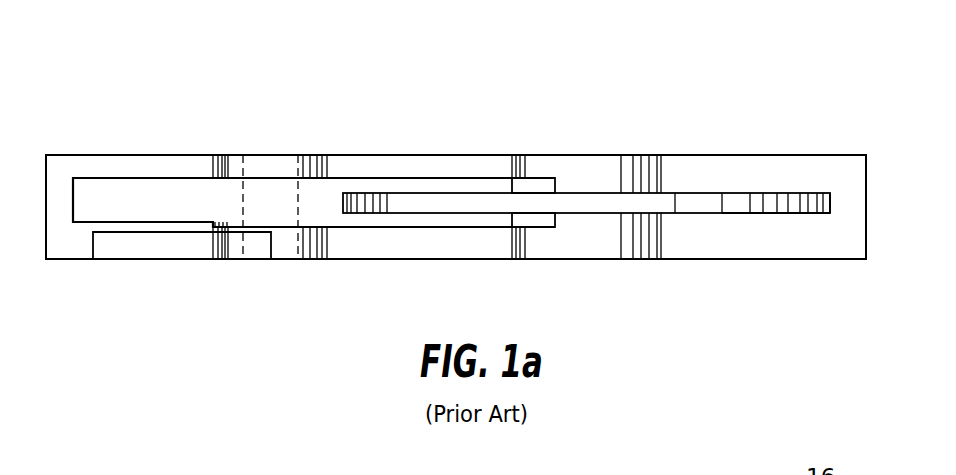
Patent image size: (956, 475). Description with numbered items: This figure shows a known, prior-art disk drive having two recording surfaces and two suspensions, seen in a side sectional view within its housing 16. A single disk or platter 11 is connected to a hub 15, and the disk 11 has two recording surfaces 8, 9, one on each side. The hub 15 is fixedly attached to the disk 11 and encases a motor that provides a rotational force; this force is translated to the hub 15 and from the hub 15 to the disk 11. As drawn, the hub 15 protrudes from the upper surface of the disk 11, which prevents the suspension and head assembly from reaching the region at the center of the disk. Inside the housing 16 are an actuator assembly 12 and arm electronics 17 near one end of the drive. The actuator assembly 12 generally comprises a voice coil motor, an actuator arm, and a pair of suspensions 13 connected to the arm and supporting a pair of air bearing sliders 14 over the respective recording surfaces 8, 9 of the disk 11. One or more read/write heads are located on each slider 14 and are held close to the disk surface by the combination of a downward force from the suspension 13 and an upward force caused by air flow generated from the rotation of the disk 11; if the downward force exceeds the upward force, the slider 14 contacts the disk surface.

The recording surface 8 is at (781, 193).
The recording surface 9 is at (785, 215).
The disk 11 is at (831, 204).
The actuator assembly 12 is at (286, 128).
The suspension 13 is at (393, 177).
The air bearing slider 14 is at (543, 183).
The hub 15 is at (588, 162).
The housing 16 is at (722, 153).
The arm electronics 17 is at (183, 252).